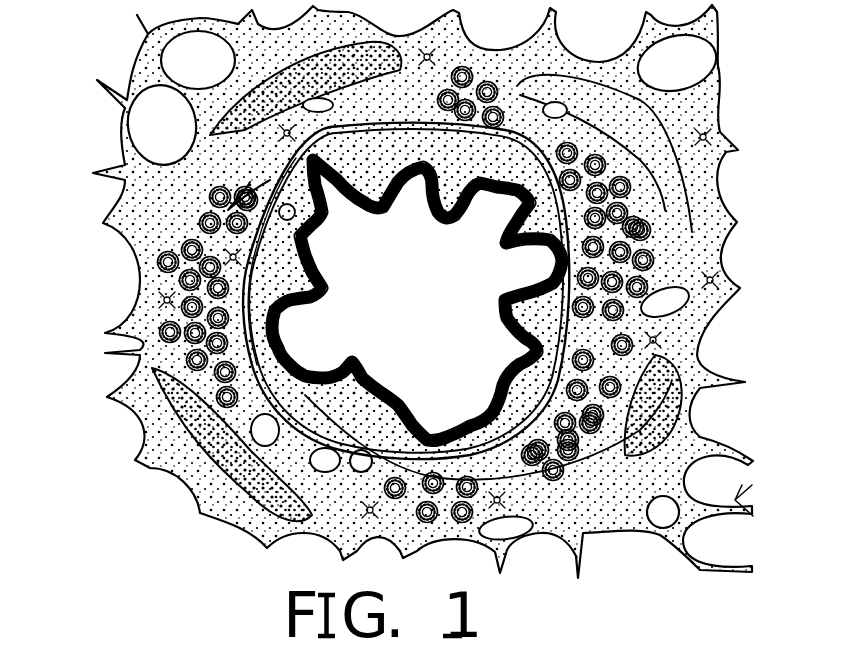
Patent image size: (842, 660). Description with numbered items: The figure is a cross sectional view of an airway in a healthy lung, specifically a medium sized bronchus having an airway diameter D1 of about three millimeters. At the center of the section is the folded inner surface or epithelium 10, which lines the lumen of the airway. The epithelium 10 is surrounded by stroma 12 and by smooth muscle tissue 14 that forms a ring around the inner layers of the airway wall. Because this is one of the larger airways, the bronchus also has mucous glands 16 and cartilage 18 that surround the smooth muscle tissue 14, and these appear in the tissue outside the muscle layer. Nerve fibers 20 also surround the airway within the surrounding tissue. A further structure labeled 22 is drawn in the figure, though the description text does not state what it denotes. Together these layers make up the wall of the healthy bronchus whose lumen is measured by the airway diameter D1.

The epithelium 10 is at (262, 160).
The stroma 12 is at (172, 388).
The smooth muscle tissue 14 is at (246, 236).
The mucous glands 16 is at (157, 262).
The cartilage 18 is at (192, 482).
The nerve fibers 20 is at (160, 302).
The blood vessel 22 is at (266, 180).
The airway diameter D1 is at (508, 350).